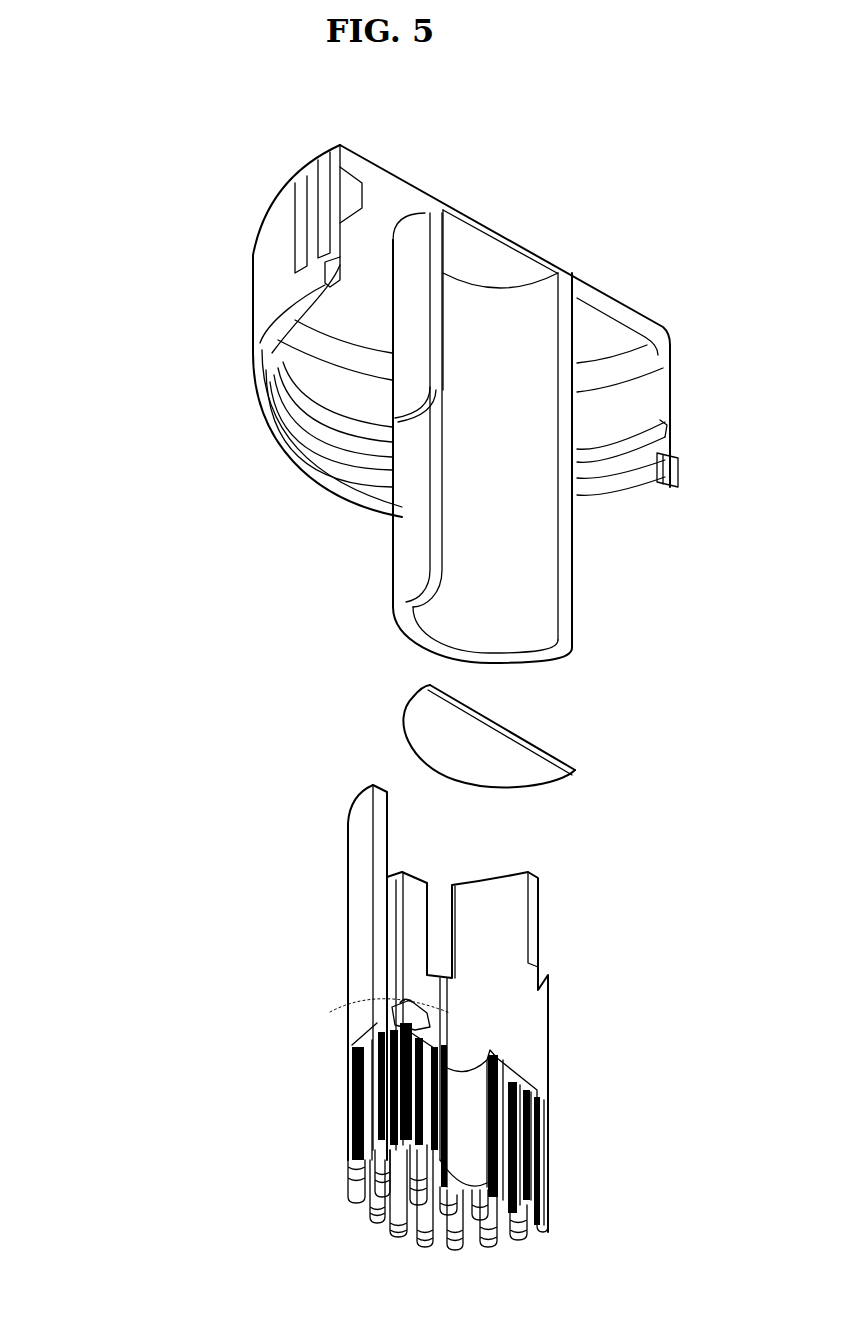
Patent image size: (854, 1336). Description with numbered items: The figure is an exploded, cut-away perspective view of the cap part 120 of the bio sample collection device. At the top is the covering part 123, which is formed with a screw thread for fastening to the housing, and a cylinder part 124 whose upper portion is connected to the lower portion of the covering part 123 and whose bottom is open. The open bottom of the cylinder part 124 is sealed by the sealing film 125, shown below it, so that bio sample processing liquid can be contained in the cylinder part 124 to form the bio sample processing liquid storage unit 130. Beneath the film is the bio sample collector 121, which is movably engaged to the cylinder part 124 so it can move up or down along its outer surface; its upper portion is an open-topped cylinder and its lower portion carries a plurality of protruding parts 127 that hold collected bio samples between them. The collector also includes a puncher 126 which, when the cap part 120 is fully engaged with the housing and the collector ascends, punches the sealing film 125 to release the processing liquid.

The cap part 120 is at (112, 284).
The bio sample collector 121 is at (357, 910).
The covering part 123 is at (273, 296).
The cylinder part 124 is at (412, 522).
The sealing film 125 is at (423, 707).
The puncher 126 is at (395, 1006).
The protruding parts 127 is at (372, 1108).
The bio sample processing liquid storage unit 130 is at (505, 530).